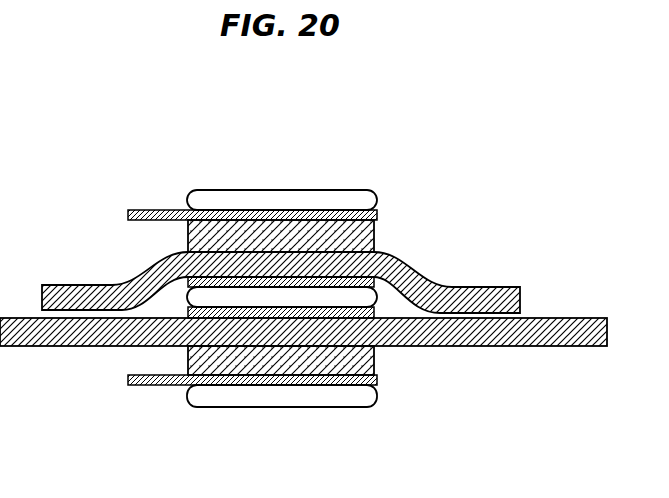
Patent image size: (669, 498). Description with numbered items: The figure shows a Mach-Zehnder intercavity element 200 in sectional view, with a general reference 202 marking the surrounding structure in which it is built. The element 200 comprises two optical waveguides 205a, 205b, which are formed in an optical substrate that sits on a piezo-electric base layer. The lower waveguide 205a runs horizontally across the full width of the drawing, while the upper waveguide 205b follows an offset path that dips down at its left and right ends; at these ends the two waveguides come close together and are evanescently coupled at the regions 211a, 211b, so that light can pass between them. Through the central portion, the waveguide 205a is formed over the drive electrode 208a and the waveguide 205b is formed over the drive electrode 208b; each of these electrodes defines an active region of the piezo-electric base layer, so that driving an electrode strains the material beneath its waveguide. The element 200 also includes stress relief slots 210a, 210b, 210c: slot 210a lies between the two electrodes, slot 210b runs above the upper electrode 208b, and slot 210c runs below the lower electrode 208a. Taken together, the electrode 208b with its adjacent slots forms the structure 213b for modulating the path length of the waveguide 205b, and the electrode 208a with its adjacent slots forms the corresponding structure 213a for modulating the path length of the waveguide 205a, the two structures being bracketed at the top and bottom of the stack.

The Mach-Zehnder intercavity element 200 is at (108, 104).
The substrate / circuit board 202 is at (500, 158).
The waveguide 205a is at (555, 320).
The waveguide 205b is at (463, 287).
The drive electrode 208a is at (375, 367).
The drive electrode 208b is at (377, 232).
The stress relief slot 210a is at (152, 262).
The stress relief slot 210b is at (188, 200).
The stress relief slot 210c is at (188, 393).
The evanescent coupling region 211a is at (75, 312).
The evanescent coupling region 211b is at (480, 313).
The path length modulating structure 213a is at (365, 418).
The path length modulating structure 213b is at (365, 173).